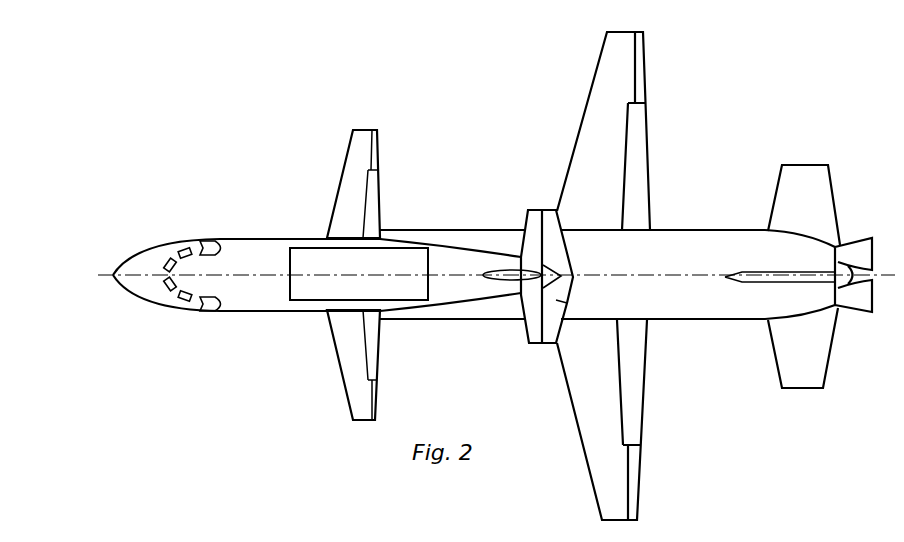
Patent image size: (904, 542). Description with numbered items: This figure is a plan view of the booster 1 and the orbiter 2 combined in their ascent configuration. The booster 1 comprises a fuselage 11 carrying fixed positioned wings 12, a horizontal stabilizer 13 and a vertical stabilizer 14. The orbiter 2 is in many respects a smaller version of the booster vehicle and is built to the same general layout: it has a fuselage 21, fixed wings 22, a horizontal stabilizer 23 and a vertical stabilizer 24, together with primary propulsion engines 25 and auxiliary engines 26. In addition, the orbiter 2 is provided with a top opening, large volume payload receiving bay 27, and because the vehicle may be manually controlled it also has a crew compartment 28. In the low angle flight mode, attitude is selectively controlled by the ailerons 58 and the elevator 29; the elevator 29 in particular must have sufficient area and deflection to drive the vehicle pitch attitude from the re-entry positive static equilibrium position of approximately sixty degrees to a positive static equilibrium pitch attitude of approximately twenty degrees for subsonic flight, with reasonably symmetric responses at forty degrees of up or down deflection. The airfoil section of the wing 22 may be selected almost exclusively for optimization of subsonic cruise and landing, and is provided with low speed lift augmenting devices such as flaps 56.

The booster 1 is at (677, 261).
The orbiter 2 is at (236, 273).
The fuselage 11 is at (707, 230).
The fixed positioned wings 12 is at (614, 138).
The horizontal stabilizer 13 is at (816, 216).
The vertical stabilizer 14 is at (760, 272).
The fuselage 21 is at (259, 290).
The fixed wings 22 is at (357, 229).
The horizontal stabilizer 23 is at (532, 226).
The vertical stabilizer 24 is at (490, 270).
The primary propulsion engines 25 is at (563, 256).
The auxiliary engines 26 is at (207, 241).
The payload receiving bay 27 is at (373, 273).
The crew compartment 28 is at (166, 301).
The elevator 29 is at (557, 307).
The flaps 56 is at (373, 220).
The ailerons 58 is at (378, 153).